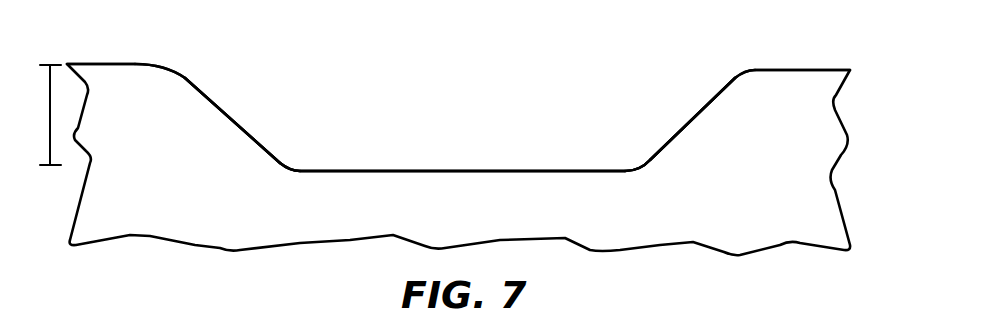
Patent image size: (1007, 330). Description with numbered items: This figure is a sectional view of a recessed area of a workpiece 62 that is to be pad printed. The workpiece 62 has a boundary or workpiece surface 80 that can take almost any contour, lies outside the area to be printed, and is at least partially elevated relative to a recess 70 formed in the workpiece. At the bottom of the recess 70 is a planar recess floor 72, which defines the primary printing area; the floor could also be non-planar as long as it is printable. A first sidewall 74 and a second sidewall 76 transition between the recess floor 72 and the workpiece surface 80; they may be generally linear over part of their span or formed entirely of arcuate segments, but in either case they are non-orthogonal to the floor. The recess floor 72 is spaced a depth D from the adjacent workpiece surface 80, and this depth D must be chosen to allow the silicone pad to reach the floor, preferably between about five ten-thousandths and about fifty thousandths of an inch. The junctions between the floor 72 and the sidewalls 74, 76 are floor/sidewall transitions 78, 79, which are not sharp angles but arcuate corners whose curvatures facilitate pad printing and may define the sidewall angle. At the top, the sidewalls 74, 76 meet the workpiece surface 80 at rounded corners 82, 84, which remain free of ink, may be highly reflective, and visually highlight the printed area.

The workpiece 62 is at (780, 175).
The recess 70 is at (448, 112).
The recess floor 72 is at (458, 168).
The first sidewall 74 is at (237, 127).
The second sidewall 76 is at (682, 132).
The floor/sidewall transition 78 is at (282, 166).
The floor/sidewall transition 79 is at (632, 168).
The workpiece surface 80 is at (107, 62).
The rounded corner 82 is at (188, 80).
The rounded corner 84 is at (745, 72).
The depth D is at (50, 115).